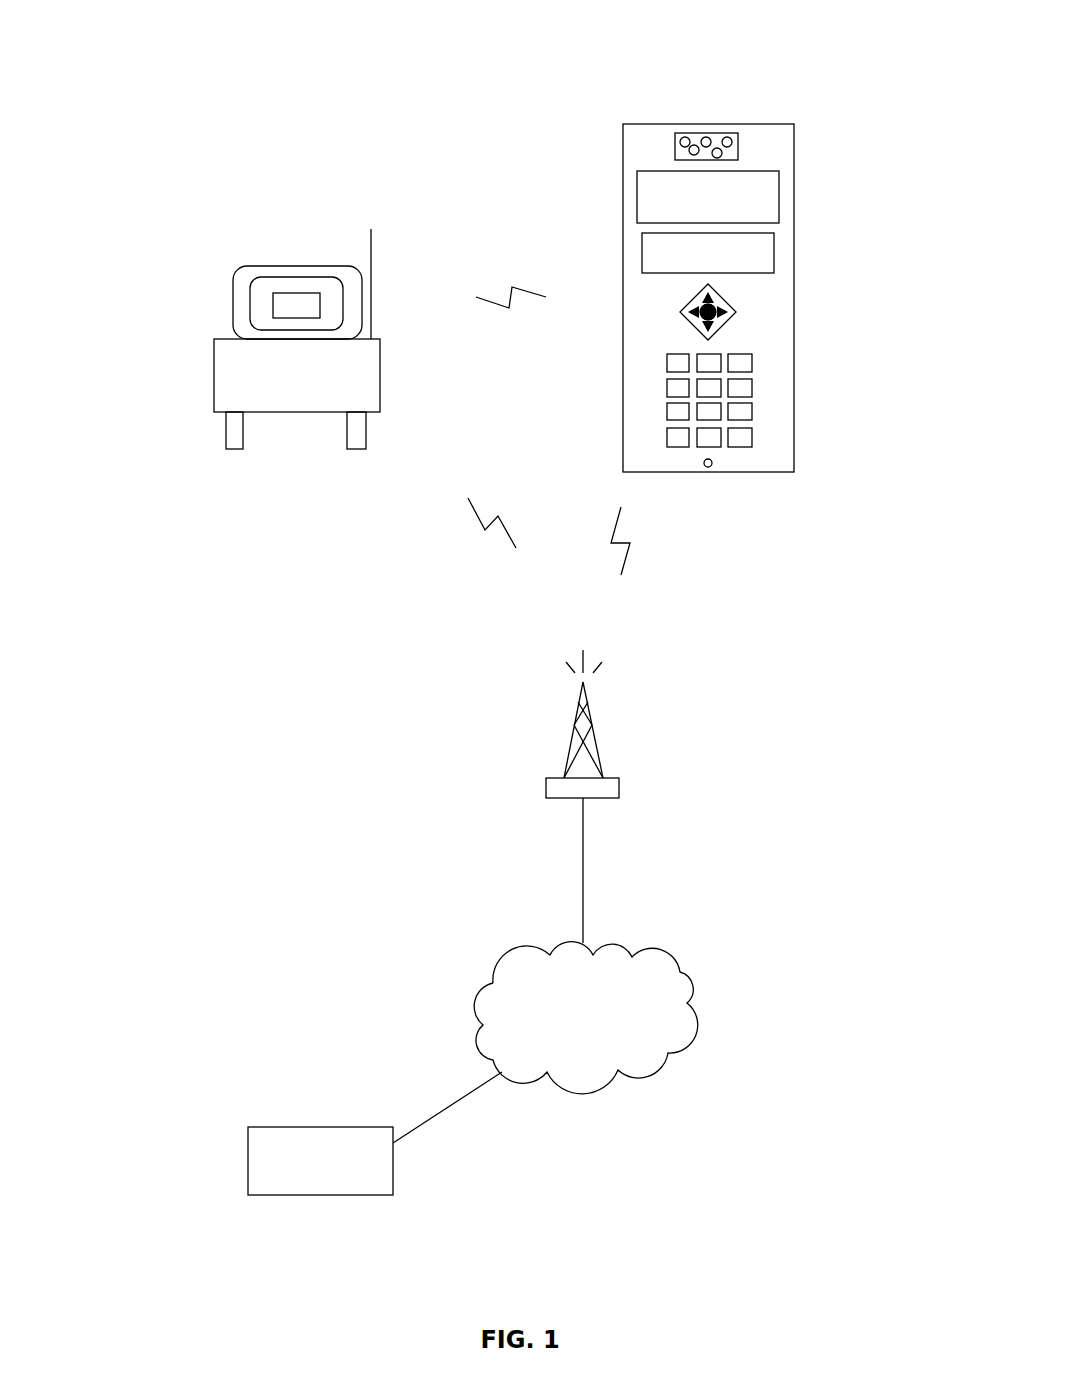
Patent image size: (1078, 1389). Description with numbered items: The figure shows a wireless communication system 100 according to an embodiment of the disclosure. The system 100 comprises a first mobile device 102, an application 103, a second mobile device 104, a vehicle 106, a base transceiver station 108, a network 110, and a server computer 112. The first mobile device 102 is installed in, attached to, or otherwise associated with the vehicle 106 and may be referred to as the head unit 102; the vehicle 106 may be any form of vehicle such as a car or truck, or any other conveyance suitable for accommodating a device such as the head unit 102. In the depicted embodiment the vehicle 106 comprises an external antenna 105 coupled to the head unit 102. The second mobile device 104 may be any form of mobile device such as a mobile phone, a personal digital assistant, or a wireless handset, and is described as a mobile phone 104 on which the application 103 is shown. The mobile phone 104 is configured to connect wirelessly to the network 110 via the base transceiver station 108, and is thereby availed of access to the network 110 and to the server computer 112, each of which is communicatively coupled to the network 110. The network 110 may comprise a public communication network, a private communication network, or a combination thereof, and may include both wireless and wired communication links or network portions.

The wireless communication system 100 is at (93, 74).
The first mobile device 102 is at (273, 305).
The application 103 is at (642, 253).
The second mobile device 104 is at (794, 298).
The external antenna 105 is at (371, 243).
The vehicle 106 is at (380, 369).
The base transceiver station 108 is at (619, 787).
The network 110 is at (670, 950).
The server computer 112 is at (325, 1127).